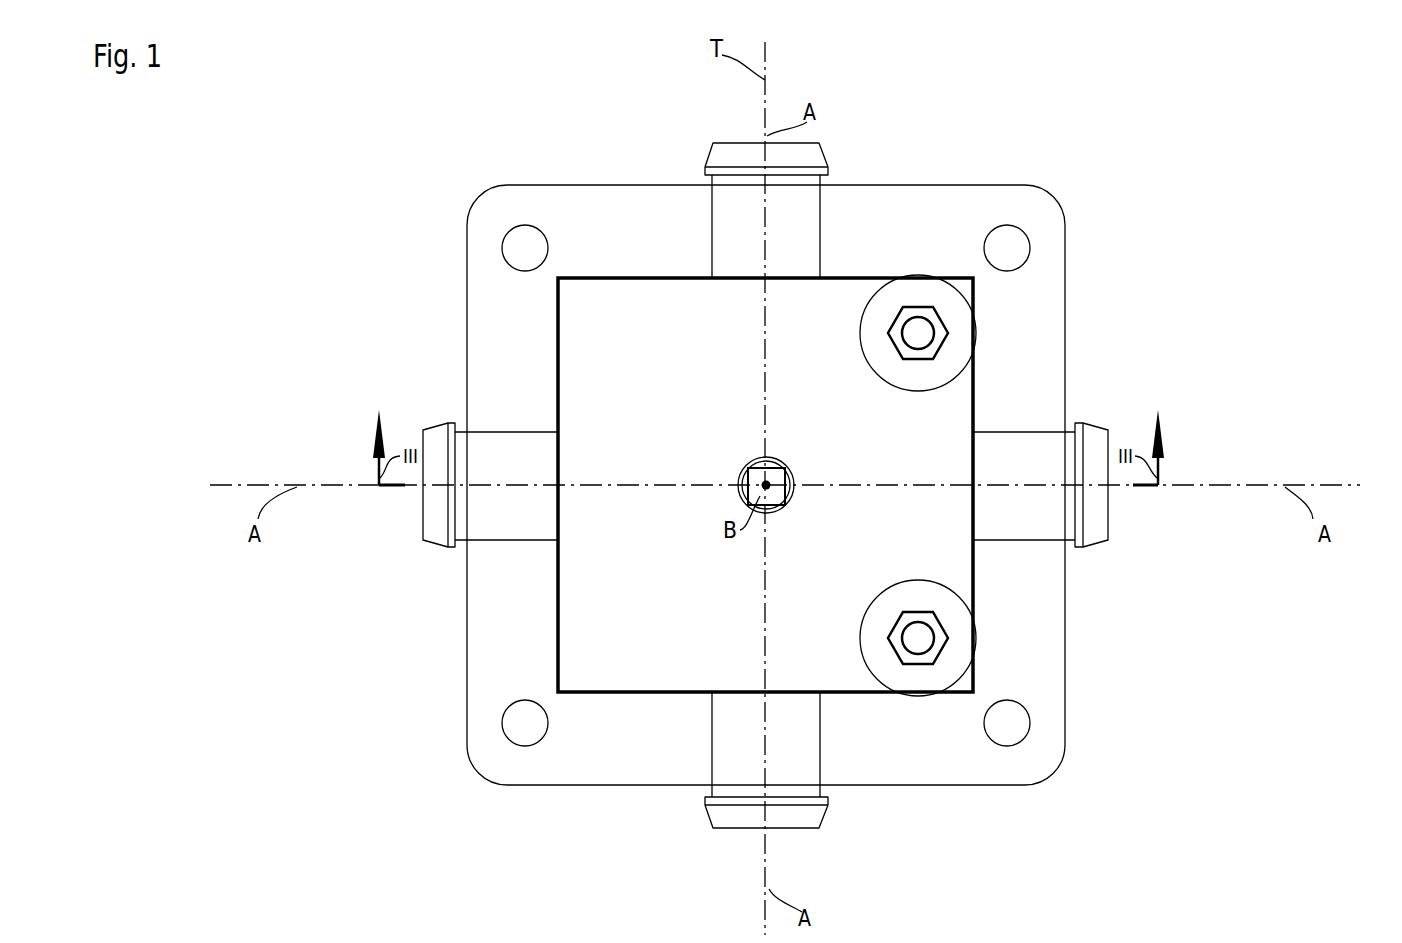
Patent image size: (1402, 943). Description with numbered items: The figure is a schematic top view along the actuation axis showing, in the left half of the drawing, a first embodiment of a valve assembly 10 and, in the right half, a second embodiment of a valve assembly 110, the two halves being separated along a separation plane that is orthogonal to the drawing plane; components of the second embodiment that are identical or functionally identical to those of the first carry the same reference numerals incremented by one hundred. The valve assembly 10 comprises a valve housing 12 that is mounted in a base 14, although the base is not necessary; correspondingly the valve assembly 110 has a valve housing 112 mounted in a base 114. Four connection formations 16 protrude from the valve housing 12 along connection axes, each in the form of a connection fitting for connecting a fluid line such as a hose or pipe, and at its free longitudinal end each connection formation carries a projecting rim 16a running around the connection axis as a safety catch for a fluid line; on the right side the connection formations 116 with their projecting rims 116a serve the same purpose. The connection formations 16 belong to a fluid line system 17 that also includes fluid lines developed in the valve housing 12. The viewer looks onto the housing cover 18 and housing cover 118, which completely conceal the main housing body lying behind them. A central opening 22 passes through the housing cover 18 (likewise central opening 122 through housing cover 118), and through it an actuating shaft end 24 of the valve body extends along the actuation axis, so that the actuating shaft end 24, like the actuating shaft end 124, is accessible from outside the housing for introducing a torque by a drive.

The valve assembly 10 is at (295, 253).
The valve assembly 110 is at (1200, 253).
The valve housing 12 is at (552, 362).
The valve housing 112 is at (975, 357).
The base 14 is at (478, 214).
The base 114 is at (1063, 214).
The connection formation 16 is at (740, 228).
The connection formation 116 is at (792, 240).
The projecting rim 16a is at (742, 152).
The projecting rim 116a is at (797, 152).
The fluid line system 17 is at (408, 385).
The housing cover 18 is at (677, 407).
The housing cover 118 is at (848, 407).
The central opening 22 is at (752, 464).
The central opening 122 is at (781, 464).
The actuating shaft end 24 is at (748, 488).
The actuating shaft end 124 is at (782, 488).